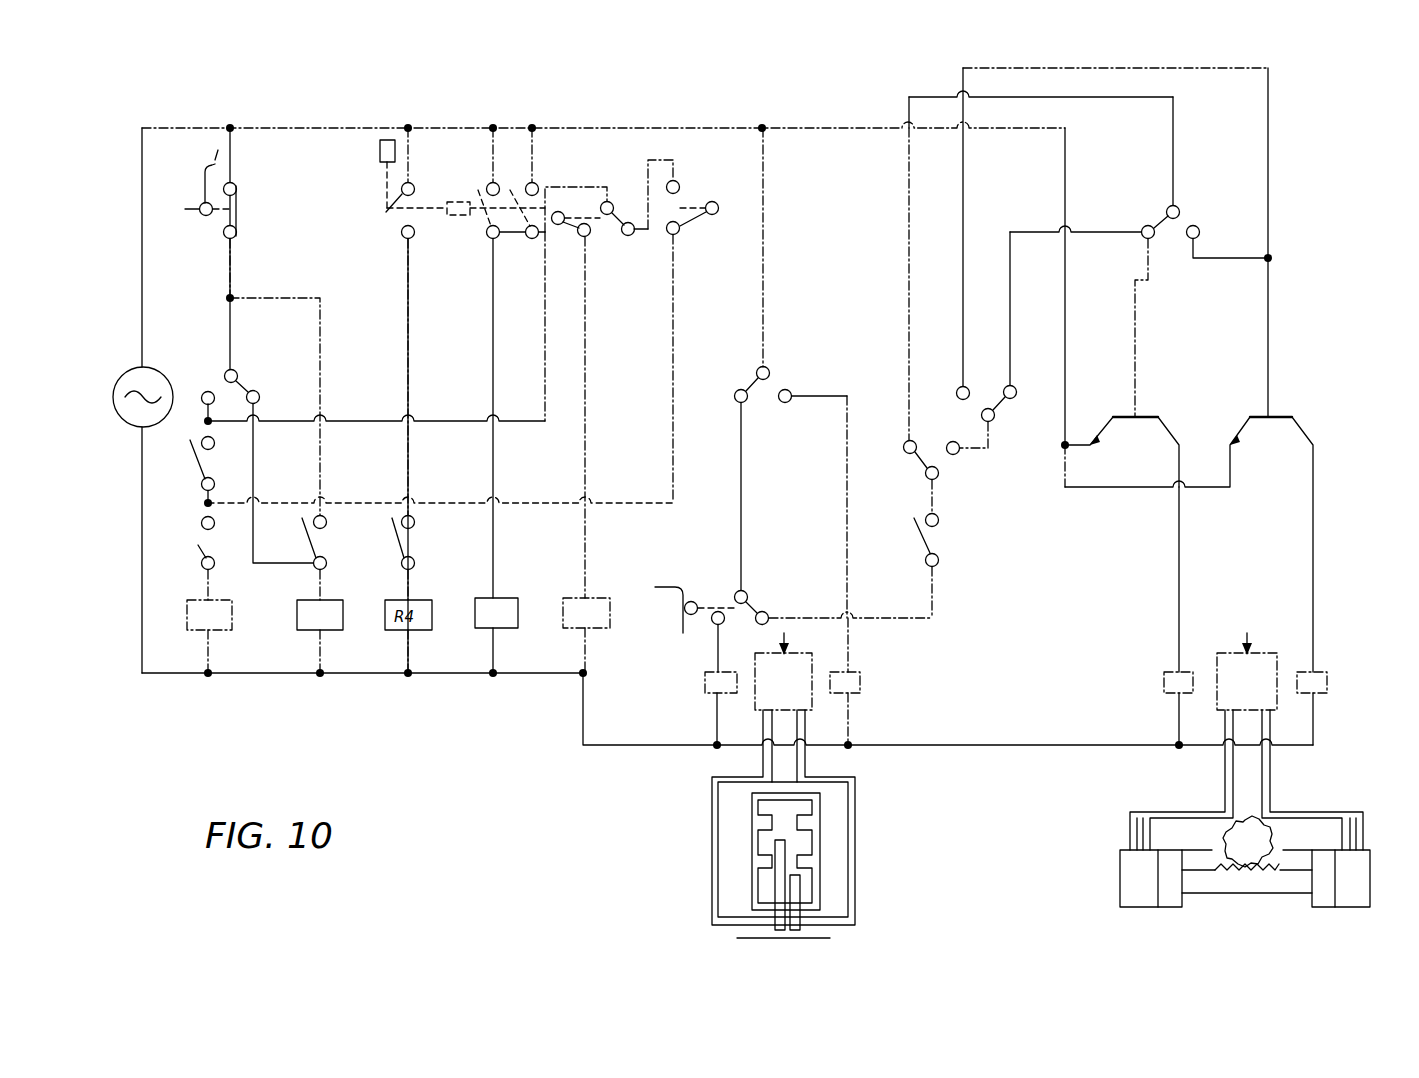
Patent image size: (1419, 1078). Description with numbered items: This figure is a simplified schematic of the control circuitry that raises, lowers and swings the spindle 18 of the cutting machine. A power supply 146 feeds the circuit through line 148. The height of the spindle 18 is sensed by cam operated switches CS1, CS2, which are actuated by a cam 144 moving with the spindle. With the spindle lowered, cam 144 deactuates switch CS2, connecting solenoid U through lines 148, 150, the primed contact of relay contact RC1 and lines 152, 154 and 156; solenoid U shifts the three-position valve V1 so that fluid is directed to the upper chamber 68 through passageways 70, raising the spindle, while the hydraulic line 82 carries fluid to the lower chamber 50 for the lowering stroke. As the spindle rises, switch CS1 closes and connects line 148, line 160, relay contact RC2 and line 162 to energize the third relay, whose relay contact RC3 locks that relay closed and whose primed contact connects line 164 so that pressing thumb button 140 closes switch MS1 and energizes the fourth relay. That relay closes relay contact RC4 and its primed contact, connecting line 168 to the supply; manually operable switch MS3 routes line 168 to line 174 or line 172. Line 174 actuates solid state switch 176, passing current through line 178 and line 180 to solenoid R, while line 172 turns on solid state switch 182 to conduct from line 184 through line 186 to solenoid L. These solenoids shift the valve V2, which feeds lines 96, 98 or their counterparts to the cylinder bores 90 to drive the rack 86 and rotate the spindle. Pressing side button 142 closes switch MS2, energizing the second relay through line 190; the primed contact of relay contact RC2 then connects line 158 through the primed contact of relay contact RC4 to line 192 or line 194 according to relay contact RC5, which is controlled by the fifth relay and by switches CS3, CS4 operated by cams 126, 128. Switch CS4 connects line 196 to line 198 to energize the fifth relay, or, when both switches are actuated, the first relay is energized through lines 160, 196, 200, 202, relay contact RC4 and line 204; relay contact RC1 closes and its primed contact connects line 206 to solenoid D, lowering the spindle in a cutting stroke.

The spindle 18 is at (820, 800).
The rod 50 is at (810, 894).
The upper chamber 68 is at (810, 854).
The passageways 70 is at (712, 844).
The hydraulic line 82 is at (855, 818).
The rack 86 is at (1197, 897).
The receptive bores 90 is at (1119, 874).
The line 96 is at (1136, 824).
The line 98 is at (1129, 836).
The cam 126 is at (693, 232).
The cam 128 is at (550, 230).
The thumb button 140 is at (386, 140).
The side buttons 142 is at (442, 216).
The cam 144 is at (687, 580).
The power supply 146 is at (112, 421).
The line 148 is at (290, 128).
The line 150 is at (768, 242).
The line 152 is at (742, 510).
The line 154 is at (714, 660).
The line 156 is at (240, 678).
The line 158 is at (935, 597).
The line 160 is at (231, 260).
The line 162 is at (318, 458).
The line 164 is at (410, 287).
The line 168 is at (908, 289).
The line 172 is at (1207, 258).
The line 174 is at (1137, 320).
The solid state switch 176 is at (1152, 416).
The line 178 is at (1086, 438).
The line 180 is at (1183, 548).
The solid state switch 182 is at (1287, 409).
The line 184 is at (1105, 490).
The line 186 is at (1313, 548).
The line 190 is at (496, 300).
The line 192 is at (1017, 68).
The line 194 is at (1012, 294).
The line 196 is at (590, 312).
The line 198 is at (505, 447).
The line 200 is at (641, 230).
The line 202 is at (680, 410).
The line 204 is at (212, 586).
The line 206 is at (854, 556).
The cam operated switch CS1 is at (238, 200).
The cam operated switch CS2 is at (756, 604).
The cam operated switch CS3 is at (684, 188).
The cam operated switch CS4 is at (615, 210).
The manually operable switch MS1 is at (404, 192).
The manually operable switch MS2 is at (516, 178).
The manually operable switch MS3 is at (1168, 212).
The relay contact RC1 is at (200, 468).
The relay contact RC2 is at (242, 372).
The relay contact RC3 is at (325, 553).
The relay contact RC4 is at (204, 546).
The relay contact RC5 is at (999, 420).
The three-position valve V1 is at (807, 681).
The valve V2 is at (1247, 671).